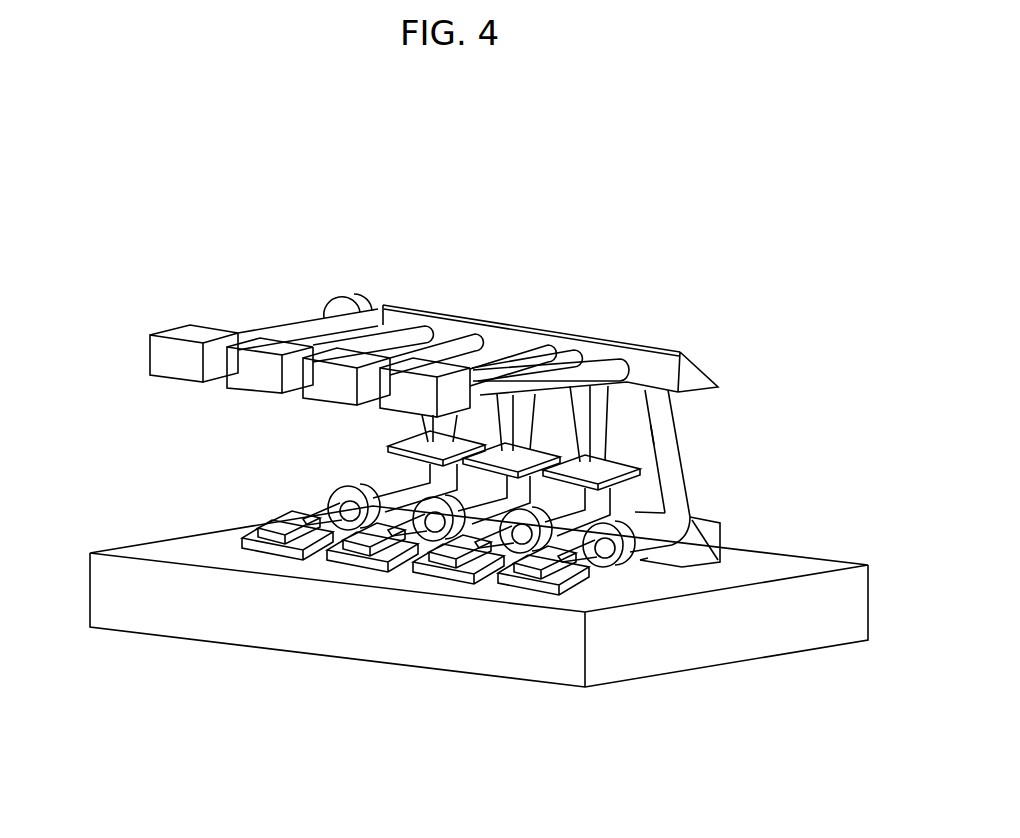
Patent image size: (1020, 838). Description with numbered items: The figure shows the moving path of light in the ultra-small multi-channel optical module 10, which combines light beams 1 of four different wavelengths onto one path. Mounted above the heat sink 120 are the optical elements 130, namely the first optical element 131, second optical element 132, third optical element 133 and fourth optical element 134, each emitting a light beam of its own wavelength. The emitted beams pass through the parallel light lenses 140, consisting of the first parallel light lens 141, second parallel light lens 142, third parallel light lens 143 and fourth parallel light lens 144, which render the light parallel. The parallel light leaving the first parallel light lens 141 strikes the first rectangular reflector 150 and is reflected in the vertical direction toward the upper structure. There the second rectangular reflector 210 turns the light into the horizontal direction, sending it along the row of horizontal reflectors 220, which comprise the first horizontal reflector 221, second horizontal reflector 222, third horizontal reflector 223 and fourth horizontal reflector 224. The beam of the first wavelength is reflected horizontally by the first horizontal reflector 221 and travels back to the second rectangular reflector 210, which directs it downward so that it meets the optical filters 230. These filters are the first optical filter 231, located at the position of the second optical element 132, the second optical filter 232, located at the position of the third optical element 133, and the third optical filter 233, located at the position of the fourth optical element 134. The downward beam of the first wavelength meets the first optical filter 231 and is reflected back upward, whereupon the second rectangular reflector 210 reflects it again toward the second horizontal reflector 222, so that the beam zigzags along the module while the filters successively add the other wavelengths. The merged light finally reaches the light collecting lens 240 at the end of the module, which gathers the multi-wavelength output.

The ultra-small multi-channel optical module 10 is at (500, 136).
The light beams 1 is at (680, 432).
The heat sink 120 is at (704, 672).
The optical elements 130 is at (448, 738).
The first optical element 131 is at (520, 565).
The second optical element 132 is at (435, 552).
The third optical element 133 is at (350, 540).
The fourth optical element 134 is at (260, 533).
The parallel light lenses 140 is at (868, 528).
The first parallel light lens 141 is at (680, 562).
The second parallel light lens 142 is at (694, 522).
The third parallel light lens 143 is at (676, 512).
The fourth parallel light lens 144 is at (660, 480).
The first rectangular reflector 150 is at (648, 558).
The second rectangular reflector 210 is at (492, 320).
The horizontal reflectors 220 is at (275, 470).
The first horizontal reflector 221 is at (384, 408).
The second horizontal reflector 222 is at (304, 398).
The third horizontal reflector 223 is at (229, 388).
The fourth horizontal reflector 224 is at (152, 376).
The optical filters 230 is at (735, 287).
The first optical filter 231 is at (660, 386).
The second optical filter 232 is at (592, 388).
The third optical filter 233 is at (510, 395).
The light collecting lens 240 is at (340, 297).